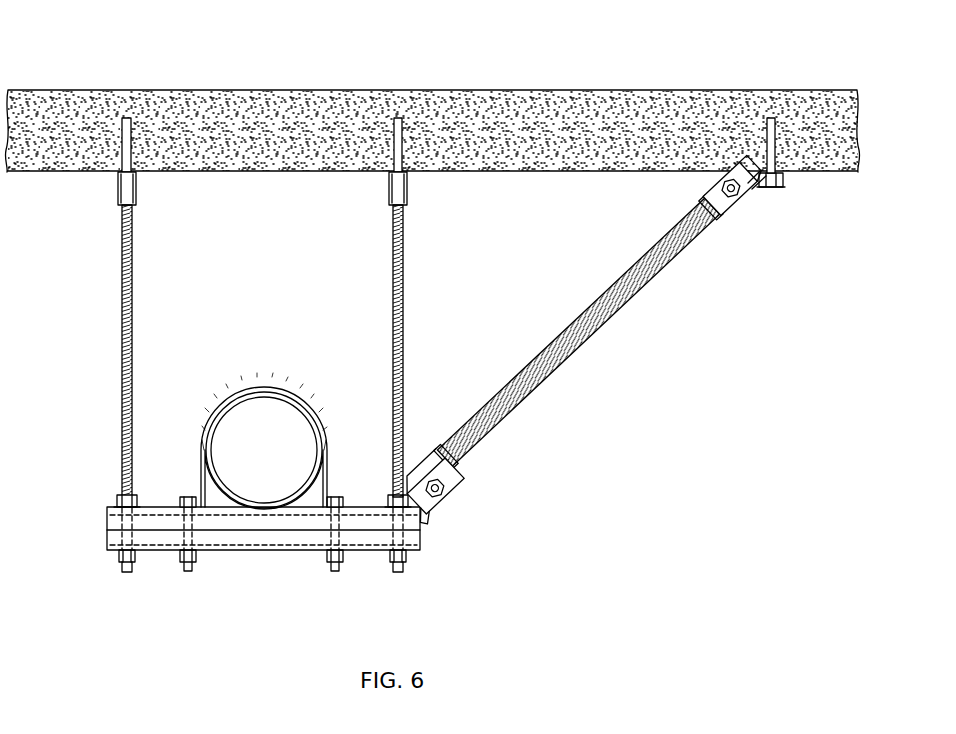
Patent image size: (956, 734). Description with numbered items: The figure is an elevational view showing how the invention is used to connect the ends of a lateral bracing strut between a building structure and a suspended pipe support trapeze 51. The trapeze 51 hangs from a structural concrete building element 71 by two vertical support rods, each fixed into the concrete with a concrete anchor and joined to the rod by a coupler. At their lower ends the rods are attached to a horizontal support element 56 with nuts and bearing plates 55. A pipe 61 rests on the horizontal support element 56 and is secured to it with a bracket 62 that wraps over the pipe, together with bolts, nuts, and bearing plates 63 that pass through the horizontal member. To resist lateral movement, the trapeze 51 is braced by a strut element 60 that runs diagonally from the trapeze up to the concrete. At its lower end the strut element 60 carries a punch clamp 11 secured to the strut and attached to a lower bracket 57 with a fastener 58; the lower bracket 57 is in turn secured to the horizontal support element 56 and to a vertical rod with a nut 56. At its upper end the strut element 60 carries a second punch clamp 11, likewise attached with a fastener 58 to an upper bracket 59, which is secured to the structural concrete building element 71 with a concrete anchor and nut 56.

The punch clamp 11 is at (478, 483).
The pipe support trapeze 51 is at (102, 370).
The nuts and bearing plates 55 is at (119, 556).
The horizontal support element 56 is at (117, 500).
The lower bracket 57 is at (420, 512).
The fastener 58 is at (107, 528).
The upper bracket 59 is at (760, 190).
The strut element 60 is at (615, 310).
The pipe 61 is at (213, 462).
The bracket 62 is at (262, 388).
The bolts, nuts, and bearing plates 63 is at (188, 572).
The structural concrete building element 71 is at (83, 90).